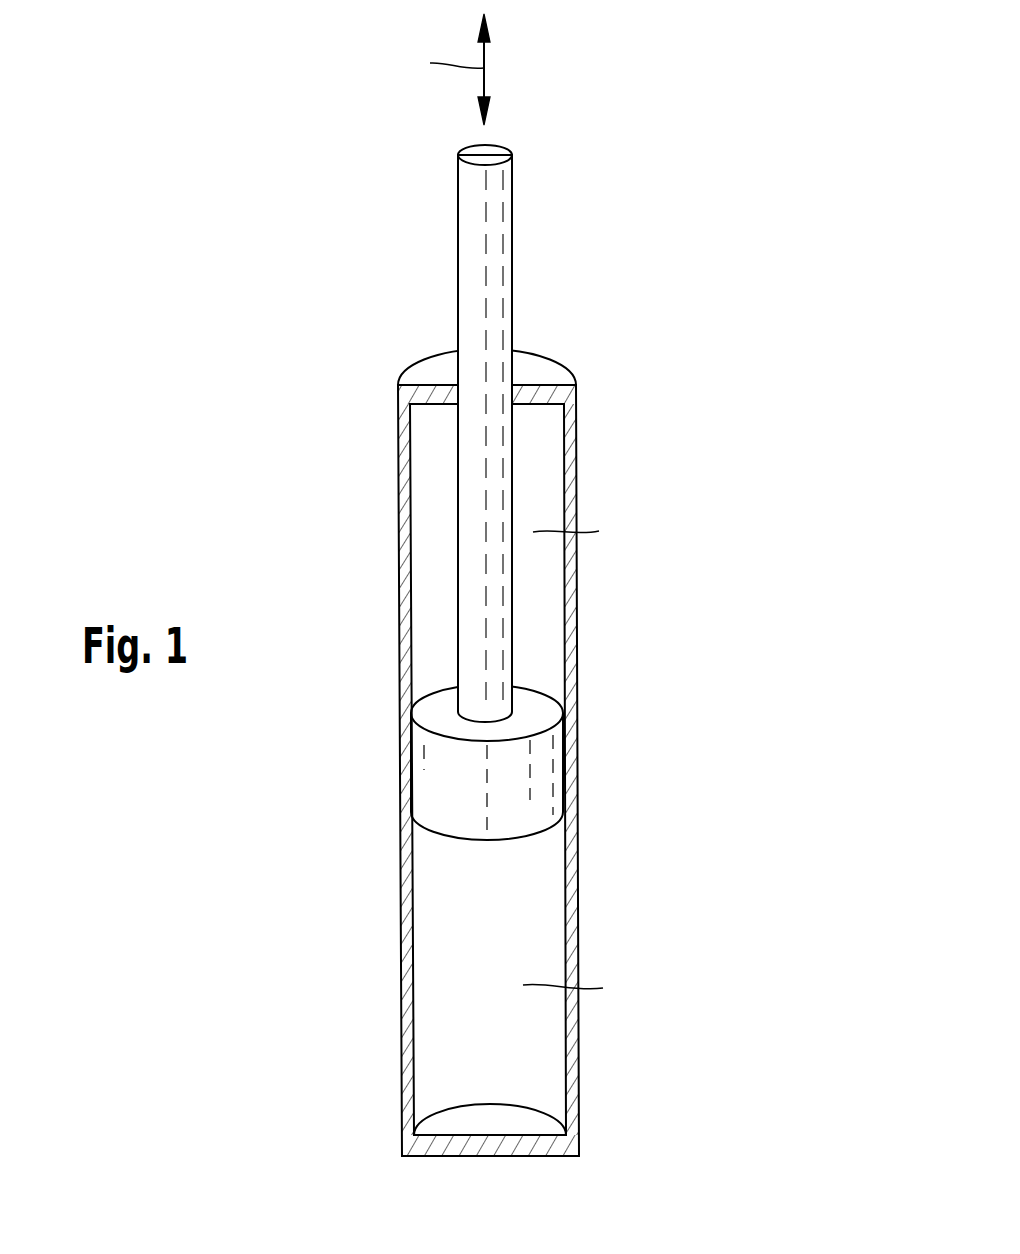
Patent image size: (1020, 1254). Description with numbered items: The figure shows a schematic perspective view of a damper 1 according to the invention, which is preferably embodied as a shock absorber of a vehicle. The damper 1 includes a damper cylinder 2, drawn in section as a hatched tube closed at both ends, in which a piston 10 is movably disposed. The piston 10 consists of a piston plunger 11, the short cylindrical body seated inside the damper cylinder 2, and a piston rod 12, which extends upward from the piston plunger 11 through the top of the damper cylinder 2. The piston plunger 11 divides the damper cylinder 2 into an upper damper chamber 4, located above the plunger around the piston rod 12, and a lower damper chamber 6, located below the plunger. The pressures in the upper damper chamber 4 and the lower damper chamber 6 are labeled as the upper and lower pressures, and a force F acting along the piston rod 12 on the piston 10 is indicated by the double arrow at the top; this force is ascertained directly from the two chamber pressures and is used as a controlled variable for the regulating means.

The damper 1 is at (252, 183).
The damper cylinder 2 is at (402, 1050).
The upper damper chamber 4 is at (436, 525).
The lower damper chamber 6 is at (446, 925).
The piston 10 is at (650, 732).
The piston plunger 11 is at (453, 780).
The piston rod 12 is at (470, 232).